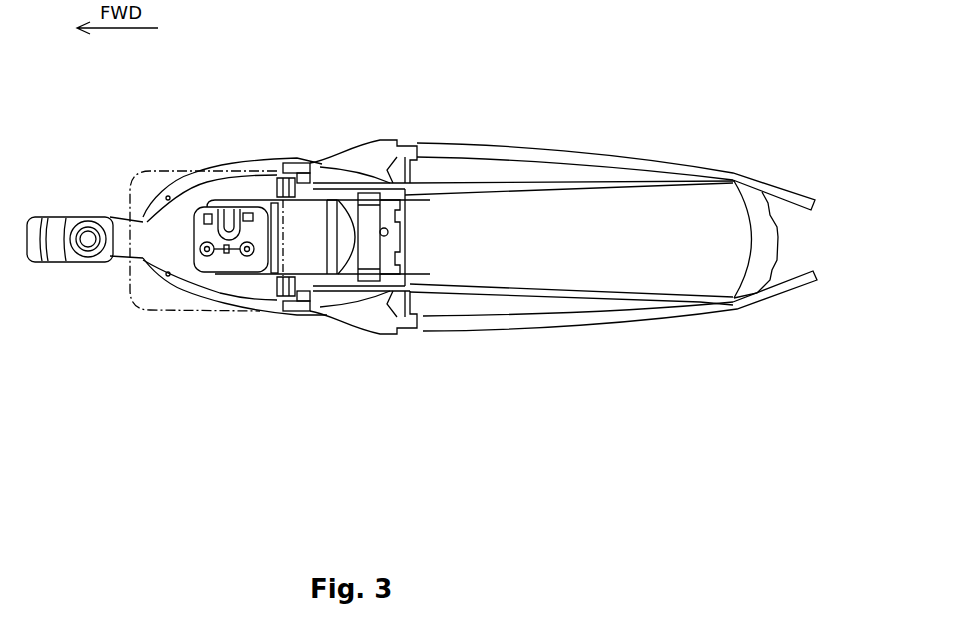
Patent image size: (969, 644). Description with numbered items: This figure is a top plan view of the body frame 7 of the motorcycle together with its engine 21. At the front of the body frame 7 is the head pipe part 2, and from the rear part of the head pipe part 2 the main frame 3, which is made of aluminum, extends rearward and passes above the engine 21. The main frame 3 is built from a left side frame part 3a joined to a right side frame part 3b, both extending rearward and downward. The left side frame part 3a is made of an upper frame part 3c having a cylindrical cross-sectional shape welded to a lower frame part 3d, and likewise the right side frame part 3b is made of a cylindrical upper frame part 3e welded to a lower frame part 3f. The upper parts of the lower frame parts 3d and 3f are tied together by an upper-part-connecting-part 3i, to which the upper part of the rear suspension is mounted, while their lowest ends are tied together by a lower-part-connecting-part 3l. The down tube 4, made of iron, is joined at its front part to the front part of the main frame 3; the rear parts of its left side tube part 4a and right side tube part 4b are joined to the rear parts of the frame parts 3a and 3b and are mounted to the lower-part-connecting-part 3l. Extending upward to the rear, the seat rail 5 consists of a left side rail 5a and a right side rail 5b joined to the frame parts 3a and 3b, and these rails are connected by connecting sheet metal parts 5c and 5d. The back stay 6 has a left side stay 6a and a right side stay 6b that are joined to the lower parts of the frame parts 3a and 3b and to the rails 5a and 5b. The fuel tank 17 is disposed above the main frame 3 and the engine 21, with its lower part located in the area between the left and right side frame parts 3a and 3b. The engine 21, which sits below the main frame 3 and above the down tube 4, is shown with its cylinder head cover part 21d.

The head pipe part 2 is at (43, 248).
The main frame 3 is at (289, 259).
The left side frame part 3a is at (339, 371).
The right side frame part 3b is at (323, 124).
The upper frame part 3c is at (262, 313).
The lower frame part 3d is at (368, 315).
The upper frame part 3e is at (257, 162).
The lower frame part 3f is at (360, 163).
The upper-part-connecting-part 3i is at (392, 208).
The lower-part-connecting-part 3l is at (403, 243).
The down tube 4 is at (226, 239).
The left side tube part 4a is at (178, 283).
The right side tube part 4b is at (172, 190).
The seat rail 5 is at (568, 241).
The left side rail 5a is at (573, 293).
The right side rail 5b is at (567, 183).
The connecting sheet metal part 5c is at (372, 268).
The connecting sheet metal part 5d is at (760, 247).
The back stay 6 is at (617, 234).
The left side stay 6a is at (640, 317).
The right side stay 6b is at (633, 160).
The body frame 7 is at (368, 110).
The fuel tank 17 is at (142, 185).
The engine 21 is at (213, 263).
The cylinder head cover part 21d is at (247, 262).